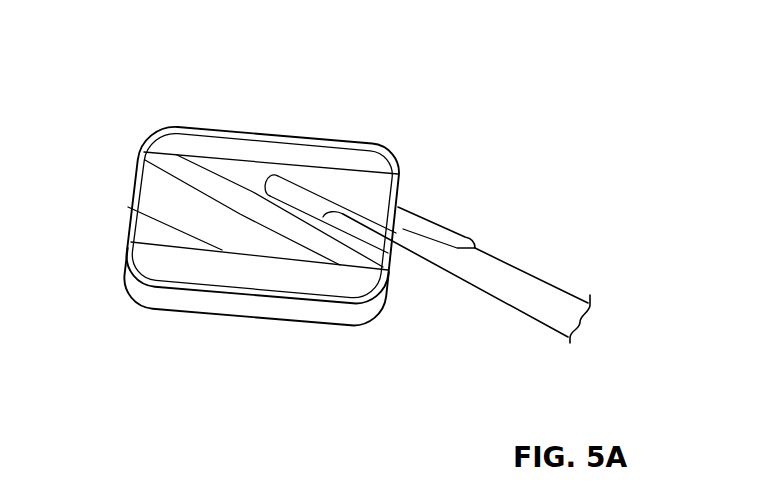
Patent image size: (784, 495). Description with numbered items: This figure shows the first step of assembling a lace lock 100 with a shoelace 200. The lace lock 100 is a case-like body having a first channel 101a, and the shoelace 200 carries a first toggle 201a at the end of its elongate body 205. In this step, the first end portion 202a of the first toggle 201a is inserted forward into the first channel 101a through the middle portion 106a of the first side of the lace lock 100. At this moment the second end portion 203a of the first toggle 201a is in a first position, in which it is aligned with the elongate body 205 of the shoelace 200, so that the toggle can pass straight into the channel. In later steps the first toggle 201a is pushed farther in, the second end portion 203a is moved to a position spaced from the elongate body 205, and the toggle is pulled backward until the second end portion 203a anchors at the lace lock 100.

The lace lock 100 is at (152, 80).
The first channel 101a is at (308, 196).
The middle portion 106a is at (405, 228).
The shoelace 200 is at (535, 345).
The first toggle 201a is at (422, 130).
The first end portion 202a is at (285, 180).
The second end portion 203a is at (440, 228).
The elongate body 205 is at (548, 282).